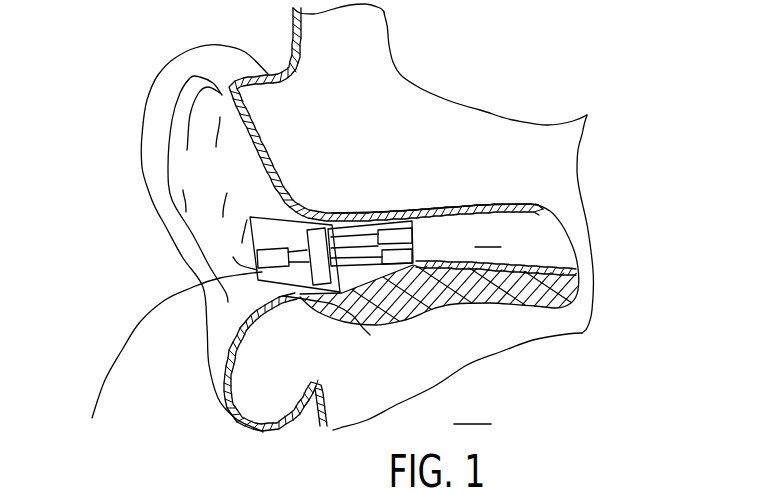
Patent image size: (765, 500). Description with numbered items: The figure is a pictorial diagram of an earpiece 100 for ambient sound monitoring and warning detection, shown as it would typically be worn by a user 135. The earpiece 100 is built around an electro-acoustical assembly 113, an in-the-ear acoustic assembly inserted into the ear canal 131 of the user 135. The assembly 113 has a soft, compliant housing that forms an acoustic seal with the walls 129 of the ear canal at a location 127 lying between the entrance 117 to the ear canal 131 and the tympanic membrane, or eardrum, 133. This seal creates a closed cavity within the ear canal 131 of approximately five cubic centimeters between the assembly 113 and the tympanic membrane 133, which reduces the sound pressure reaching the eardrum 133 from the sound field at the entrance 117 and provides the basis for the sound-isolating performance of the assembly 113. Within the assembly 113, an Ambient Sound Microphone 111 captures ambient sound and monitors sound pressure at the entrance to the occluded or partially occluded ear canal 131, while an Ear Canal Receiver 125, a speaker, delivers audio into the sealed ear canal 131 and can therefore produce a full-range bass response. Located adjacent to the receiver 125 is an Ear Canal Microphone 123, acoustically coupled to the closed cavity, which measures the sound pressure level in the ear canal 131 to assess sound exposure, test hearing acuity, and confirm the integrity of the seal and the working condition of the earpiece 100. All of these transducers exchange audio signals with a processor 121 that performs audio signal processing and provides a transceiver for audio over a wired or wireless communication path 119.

The earpiece 100 is at (472, 413).
The Ambient Sound Microphone (ASM) 111 is at (275, 262).
The electro-acoustical assembly 113 is at (257, 200).
The entrance to the ear canal 117 is at (130, 83).
The wired or wireless communication path 119 is at (118, 325).
The processor 121 is at (319, 260).
The Ear Canal Microphone (ECM) 123 is at (400, 258).
The Ear Canal Receiver (ECR) 125 is at (392, 232).
The location 127 is at (341, 189).
The walls of the ear canal 129 is at (437, 201).
The ear canal 131 is at (496, 247).
The tympanic membrane 133 is at (560, 214).
The user 135 is at (490, 55).